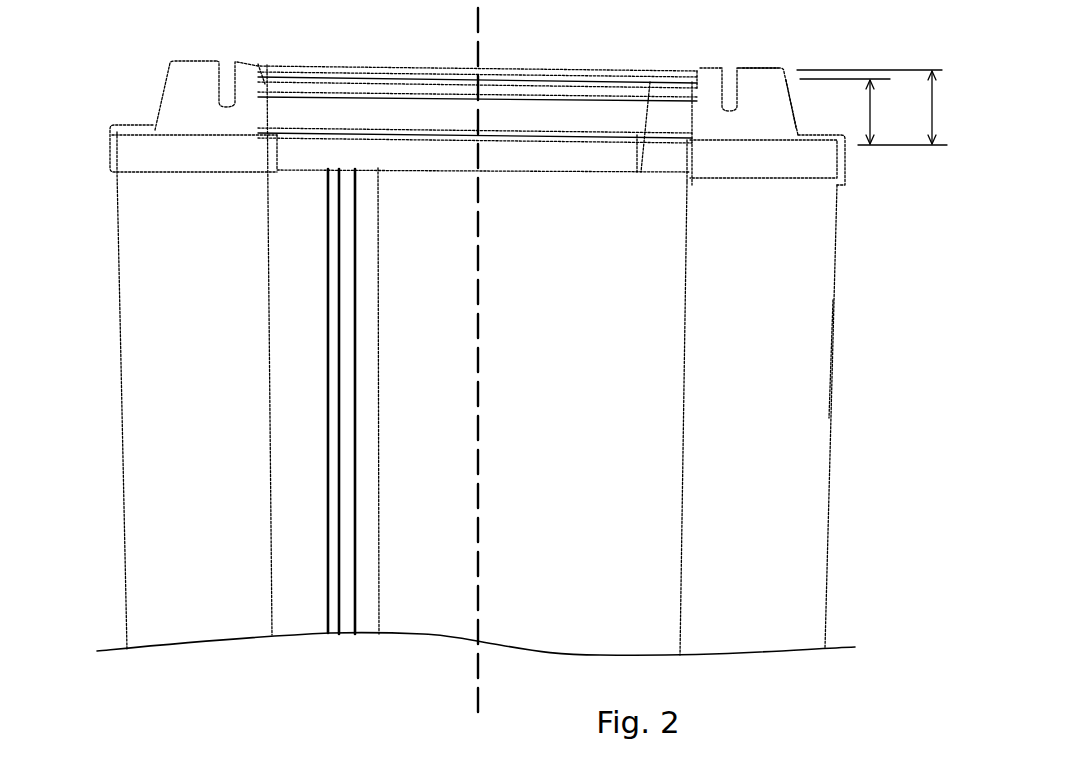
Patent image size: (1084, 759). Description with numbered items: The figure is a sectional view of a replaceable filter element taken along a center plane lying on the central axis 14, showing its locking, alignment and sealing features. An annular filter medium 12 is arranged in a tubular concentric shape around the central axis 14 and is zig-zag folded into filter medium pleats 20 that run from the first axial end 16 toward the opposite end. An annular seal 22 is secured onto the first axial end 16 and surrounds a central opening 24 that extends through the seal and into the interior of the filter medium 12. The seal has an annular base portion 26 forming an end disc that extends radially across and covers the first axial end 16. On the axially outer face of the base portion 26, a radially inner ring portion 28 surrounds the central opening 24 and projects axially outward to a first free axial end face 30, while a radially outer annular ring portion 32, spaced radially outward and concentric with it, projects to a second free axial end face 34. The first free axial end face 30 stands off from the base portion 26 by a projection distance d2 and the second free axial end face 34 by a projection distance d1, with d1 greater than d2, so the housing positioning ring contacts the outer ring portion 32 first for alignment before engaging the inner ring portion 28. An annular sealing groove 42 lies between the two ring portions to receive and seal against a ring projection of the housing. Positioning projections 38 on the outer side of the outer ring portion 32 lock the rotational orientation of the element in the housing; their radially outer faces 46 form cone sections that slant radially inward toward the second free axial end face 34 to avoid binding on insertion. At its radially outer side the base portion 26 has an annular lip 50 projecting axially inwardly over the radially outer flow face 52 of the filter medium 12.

The annular filter medium 12 is at (176, 428).
The central axis 14 is at (477, 678).
The first axial end 16 is at (134, 172).
The filter medium pleats 20 is at (328, 606).
The annular seal 22 is at (115, 84).
The central opening 24 is at (406, 182).
The annular base portion 26 is at (746, 173).
The radially inner ring portion 28 is at (709, 100).
The first free axial end face 30 is at (711, 77).
The radially outer annular ring portion 32 is at (753, 106).
The second free axial end face 34 is at (761, 68).
The positioning projections 38 is at (797, 102).
The annular sealing groove 42 is at (228, 98).
The radially outer face 46 is at (108, 149).
The annular lip 50 is at (838, 181).
The radially outer flow face 52 is at (831, 418).
The projection distance d1 is at (872, 107).
The projection distance d2 is at (845, 111).